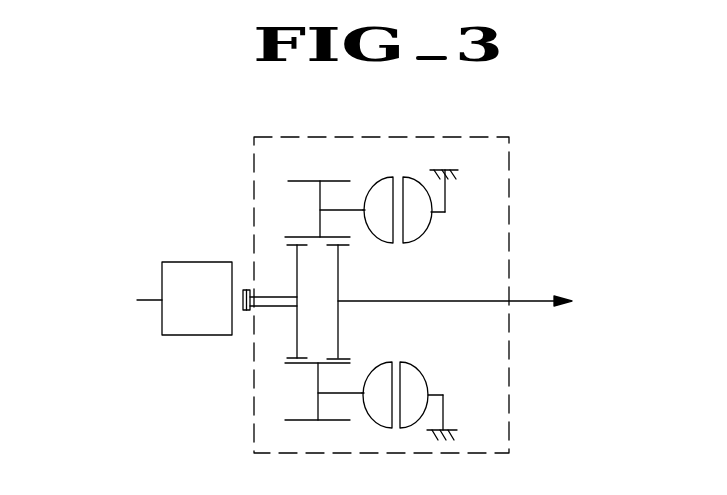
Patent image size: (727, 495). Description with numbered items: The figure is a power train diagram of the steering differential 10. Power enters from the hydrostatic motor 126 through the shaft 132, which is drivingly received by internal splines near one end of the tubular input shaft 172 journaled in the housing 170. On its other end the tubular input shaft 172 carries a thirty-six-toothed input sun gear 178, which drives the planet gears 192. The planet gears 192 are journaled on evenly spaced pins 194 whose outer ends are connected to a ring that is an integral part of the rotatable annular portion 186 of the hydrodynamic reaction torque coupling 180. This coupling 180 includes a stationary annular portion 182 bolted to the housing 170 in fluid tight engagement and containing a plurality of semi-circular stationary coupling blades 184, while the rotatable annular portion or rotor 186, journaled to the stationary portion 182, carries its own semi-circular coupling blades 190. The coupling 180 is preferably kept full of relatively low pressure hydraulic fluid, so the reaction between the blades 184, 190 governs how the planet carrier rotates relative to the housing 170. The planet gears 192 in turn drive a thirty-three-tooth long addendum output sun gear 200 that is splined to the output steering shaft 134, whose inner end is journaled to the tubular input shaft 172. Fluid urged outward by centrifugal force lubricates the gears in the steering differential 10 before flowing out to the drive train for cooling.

The steering differential 10 is at (520, 158).
The hydrostatic motor 126 is at (124, 298).
The shaft 132 is at (241, 293).
The output steering shaft 134 is at (527, 302).
The housing 170 is at (511, 193).
The tubular input shaft 172 is at (271, 295).
The input sun gear 178 is at (288, 354).
The hydrodynamic reaction torque coupling 180 is at (414, 277).
The stationary annular portion 182 is at (432, 223).
The stationary coupling blades 184 is at (416, 235).
The rotatable annular portion 186 is at (380, 182).
The coupling blades 190 is at (386, 235).
The planet gears 192 is at (328, 178).
The pins 194 is at (320, 205).
The output sun gear 200 is at (338, 288).